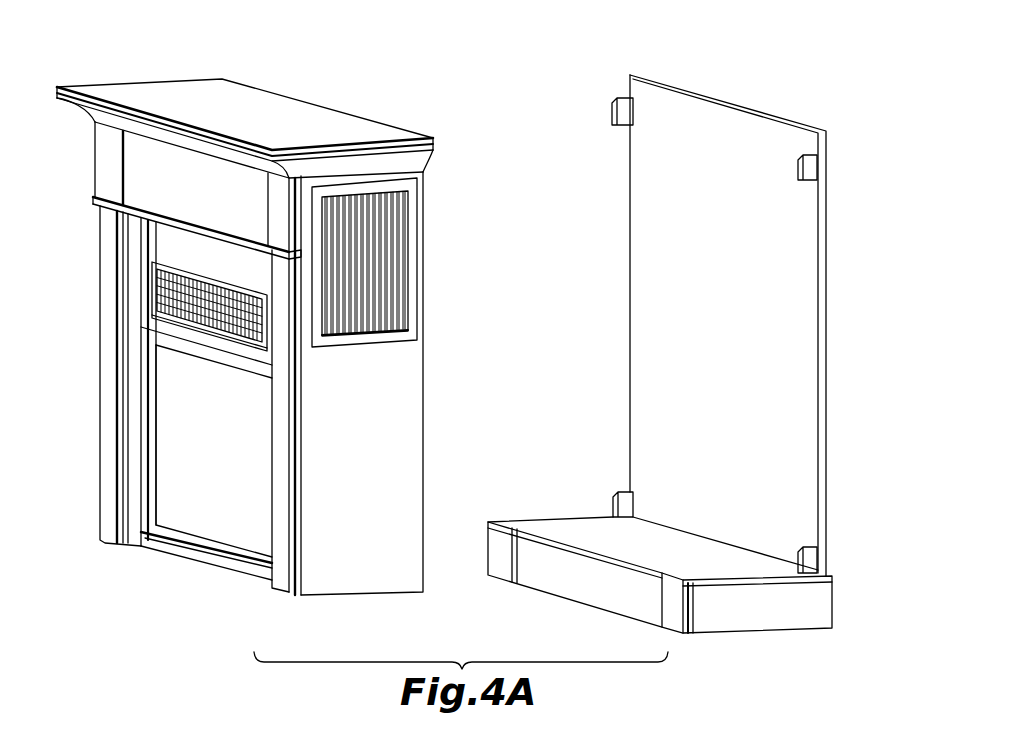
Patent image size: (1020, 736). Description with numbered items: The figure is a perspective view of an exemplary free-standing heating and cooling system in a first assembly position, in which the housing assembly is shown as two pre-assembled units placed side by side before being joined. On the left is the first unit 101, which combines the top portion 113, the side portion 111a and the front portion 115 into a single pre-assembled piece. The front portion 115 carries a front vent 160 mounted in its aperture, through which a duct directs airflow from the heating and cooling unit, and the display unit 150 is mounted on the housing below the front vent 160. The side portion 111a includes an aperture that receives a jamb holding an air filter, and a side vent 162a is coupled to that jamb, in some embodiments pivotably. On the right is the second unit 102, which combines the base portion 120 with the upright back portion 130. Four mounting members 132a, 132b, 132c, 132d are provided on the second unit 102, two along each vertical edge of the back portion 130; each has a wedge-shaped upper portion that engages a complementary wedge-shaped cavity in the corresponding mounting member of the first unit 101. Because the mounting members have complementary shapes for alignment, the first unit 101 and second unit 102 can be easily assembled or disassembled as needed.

The first unit 101 is at (262, 302).
The second unit 102 is at (697, 336).
The top portion 113 is at (190, 80).
The front portion 115 is at (106, 166).
The front vent 160 is at (168, 297).
The display unit 150 is at (167, 455).
The side vent 162a is at (401, 277).
The side portion 111a is at (411, 402).
The back portion 130 is at (823, 432).
The mounting member 132a is at (812, 562).
The mounting member 132b is at (812, 168).
The mounting member 132c is at (617, 503).
The mounting member 132d is at (618, 112).
The base portion 120 is at (813, 610).